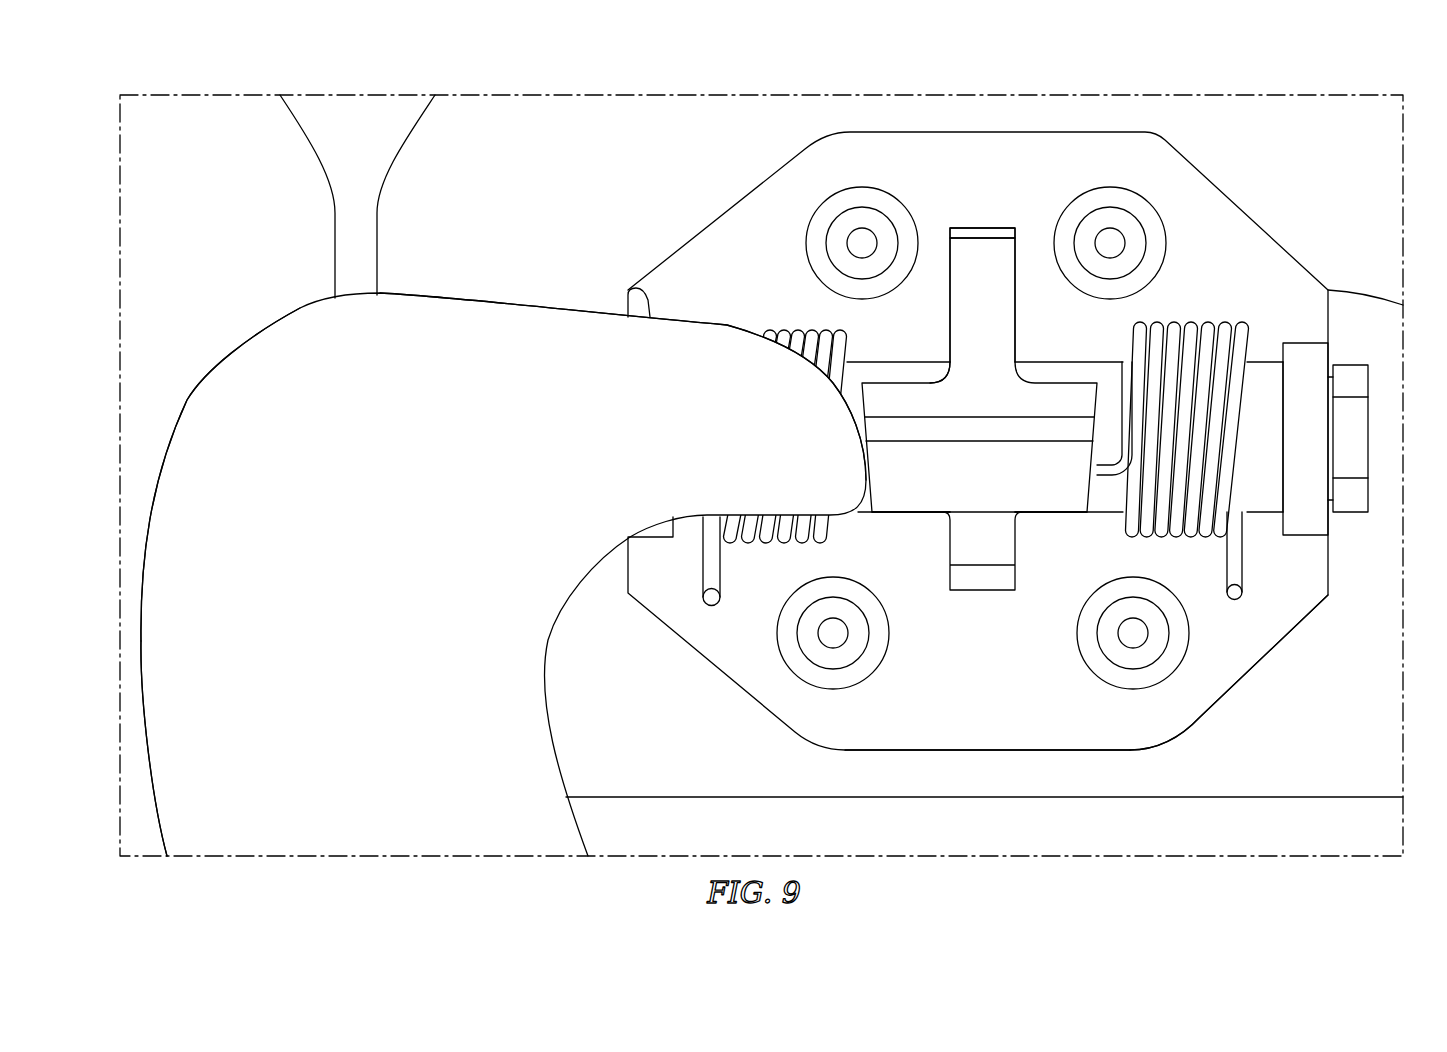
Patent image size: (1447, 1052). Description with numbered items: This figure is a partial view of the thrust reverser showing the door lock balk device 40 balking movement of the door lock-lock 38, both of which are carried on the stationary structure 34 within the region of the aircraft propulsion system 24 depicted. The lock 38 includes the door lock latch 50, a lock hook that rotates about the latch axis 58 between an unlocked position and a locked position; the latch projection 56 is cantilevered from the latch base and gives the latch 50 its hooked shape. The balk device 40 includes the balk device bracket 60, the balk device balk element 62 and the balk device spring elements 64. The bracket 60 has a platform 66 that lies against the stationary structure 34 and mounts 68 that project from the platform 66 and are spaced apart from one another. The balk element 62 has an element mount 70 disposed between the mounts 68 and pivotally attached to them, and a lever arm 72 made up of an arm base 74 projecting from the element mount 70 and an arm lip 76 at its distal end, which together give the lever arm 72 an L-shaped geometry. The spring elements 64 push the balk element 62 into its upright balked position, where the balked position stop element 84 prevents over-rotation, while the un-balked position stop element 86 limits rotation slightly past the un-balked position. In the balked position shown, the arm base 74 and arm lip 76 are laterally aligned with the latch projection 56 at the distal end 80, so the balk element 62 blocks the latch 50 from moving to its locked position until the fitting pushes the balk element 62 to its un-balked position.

The housing boundary 24 is at (1335, 80).
The stationary structure 34 is at (116, 217).
The door lock-lock 38 is at (303, 300).
The door lock balk device 40 is at (1261, 216).
The door lock latch 50 is at (171, 435).
The latch projection 56 is at (636, 304).
The latch axis 58 is at (150, 776).
The balk device bracket 60 is at (1251, 674).
The balk device balk element 62 is at (966, 402).
The balk device spring elements 64 is at (812, 336).
The platform 66 is at (1095, 752).
The mounts 68 is at (1310, 355).
The element mount 70 is at (1110, 514).
The lever arm 72 is at (633, 405).
The arm base 74 is at (902, 383).
The arm lip 76 is at (907, 514).
The distal end 80 is at (1060, 514).
The balked position stop element 84 is at (978, 232).
The un-balked position stop element 86 is at (985, 592).